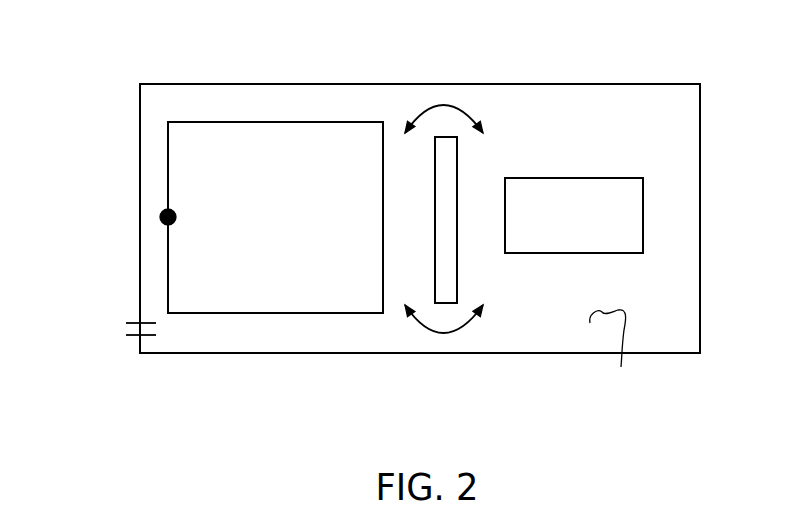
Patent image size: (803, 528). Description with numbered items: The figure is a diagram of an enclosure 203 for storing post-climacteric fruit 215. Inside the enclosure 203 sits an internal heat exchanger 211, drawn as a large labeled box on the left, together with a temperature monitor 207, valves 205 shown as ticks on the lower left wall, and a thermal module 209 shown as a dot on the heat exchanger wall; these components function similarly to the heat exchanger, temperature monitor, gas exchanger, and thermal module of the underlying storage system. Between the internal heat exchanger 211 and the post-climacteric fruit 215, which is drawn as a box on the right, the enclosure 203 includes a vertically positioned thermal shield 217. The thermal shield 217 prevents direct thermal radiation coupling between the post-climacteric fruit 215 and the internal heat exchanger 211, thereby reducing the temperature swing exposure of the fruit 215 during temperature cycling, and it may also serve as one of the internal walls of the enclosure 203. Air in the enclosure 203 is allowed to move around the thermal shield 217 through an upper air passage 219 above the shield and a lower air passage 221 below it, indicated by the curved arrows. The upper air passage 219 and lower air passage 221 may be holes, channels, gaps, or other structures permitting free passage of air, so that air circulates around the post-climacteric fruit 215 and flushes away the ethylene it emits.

The enclosure 203 is at (656, 107).
The valves 205 is at (138, 322).
The temperature monitor 207 is at (619, 357).
The thermal module 209 is at (160, 217).
The internal heat exchanger 211 is at (252, 258).
The post-climacteric fruit 215 is at (548, 242).
The thermal shield 217 is at (458, 283).
The upper air passage 219 is at (443, 105).
The lower air passage 221 is at (443, 335).